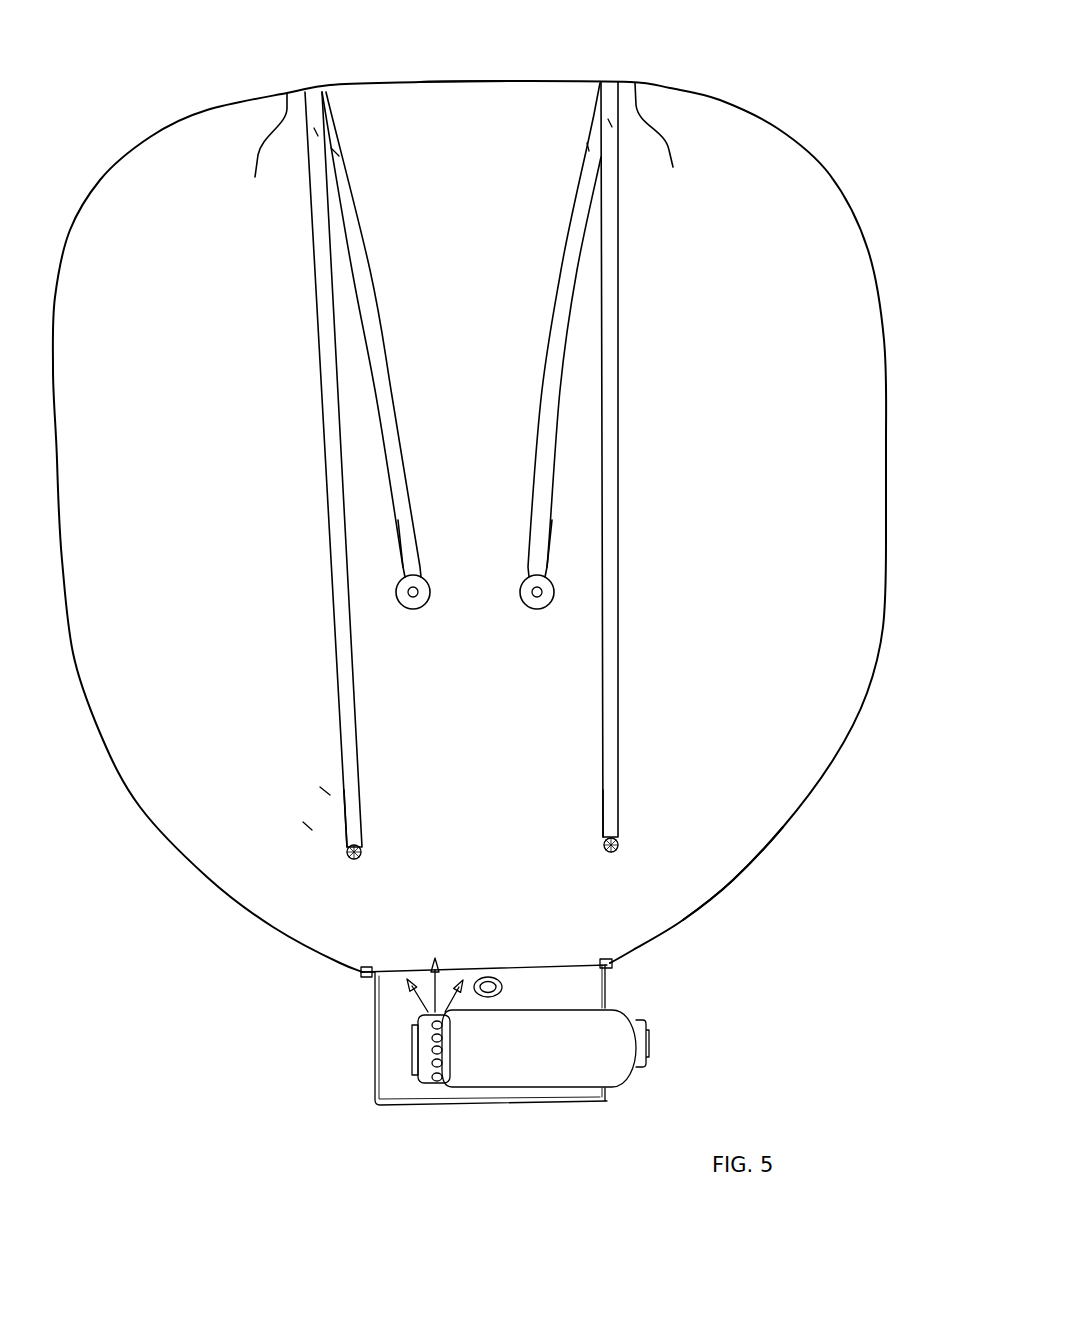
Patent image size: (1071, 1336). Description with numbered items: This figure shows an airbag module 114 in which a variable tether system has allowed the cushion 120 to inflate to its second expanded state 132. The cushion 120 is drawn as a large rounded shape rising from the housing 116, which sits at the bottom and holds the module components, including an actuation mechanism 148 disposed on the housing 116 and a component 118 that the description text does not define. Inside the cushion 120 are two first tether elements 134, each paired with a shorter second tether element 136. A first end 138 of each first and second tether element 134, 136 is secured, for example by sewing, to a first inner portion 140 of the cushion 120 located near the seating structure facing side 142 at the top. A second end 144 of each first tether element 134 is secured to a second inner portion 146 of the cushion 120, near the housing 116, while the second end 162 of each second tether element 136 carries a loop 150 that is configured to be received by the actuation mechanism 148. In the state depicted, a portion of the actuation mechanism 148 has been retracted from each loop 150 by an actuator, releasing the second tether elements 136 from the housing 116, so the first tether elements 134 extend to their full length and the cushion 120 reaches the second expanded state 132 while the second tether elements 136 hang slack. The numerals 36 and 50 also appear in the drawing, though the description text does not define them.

The second expanded state 132 is at (748, 63).
The seating structure facing side 142 is at (462, 78).
The cushion 120 is at (733, 878).
The first tether element 134 is at (326, 475).
The second tether element 136 is at (391, 390).
The first end 138 is at (587, 147).
The first inner portion 140 is at (467, 145).
The second end 144 is at (363, 828).
The second inner portion 146 is at (352, 862).
The loop 150 is at (413, 609).
The second end 162 is at (417, 547).
The cushion panel 36 is at (320, 787).
The front panel 50 is at (303, 822).
The airbag module 114 is at (463, 1050).
The housing 116 is at (577, 1103).
The inflator 118 is at (630, 1075).
The actuation mechanism 148 is at (493, 993).